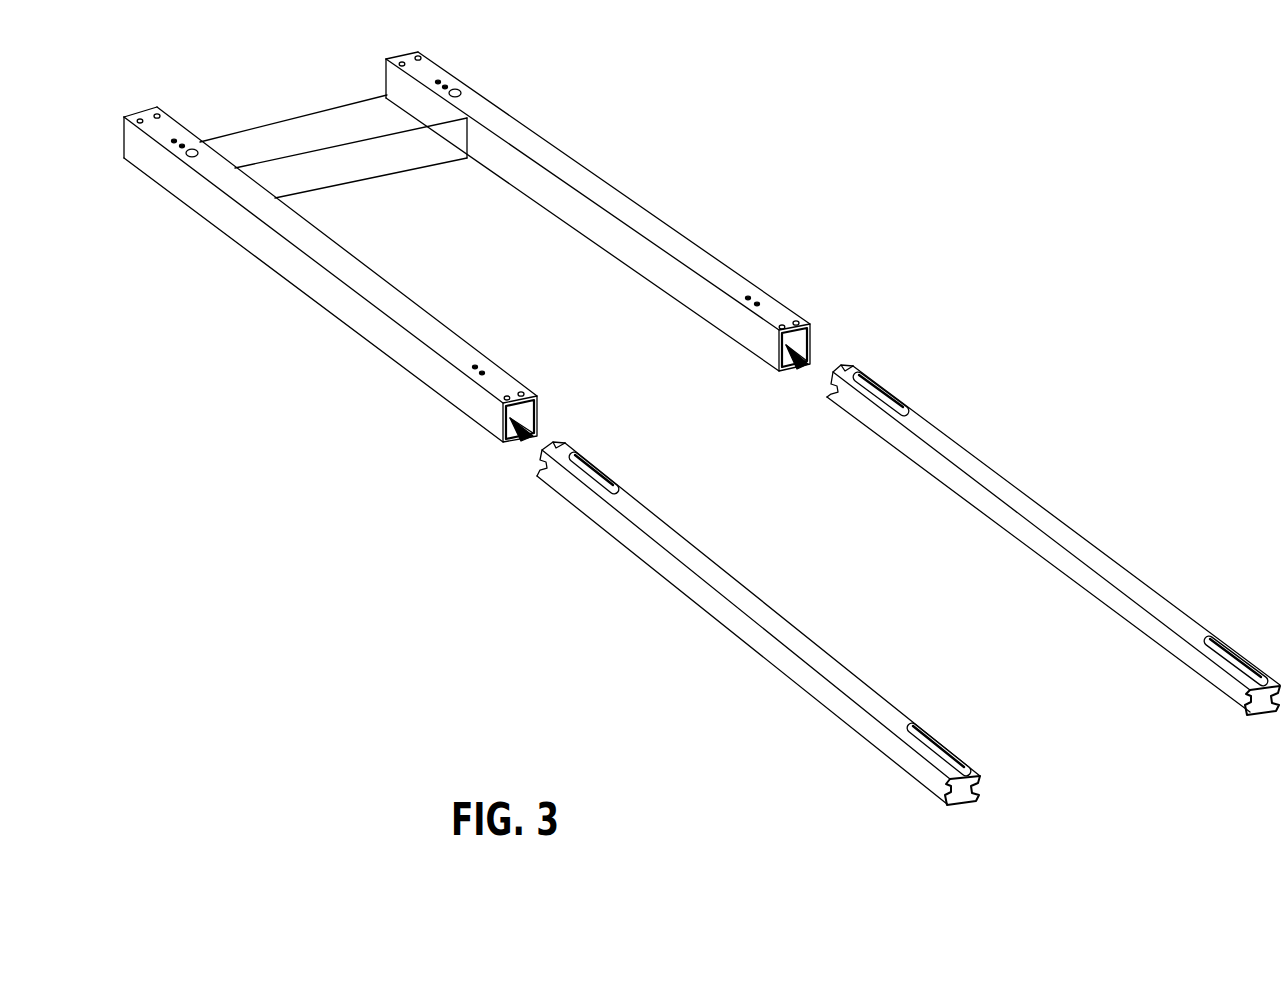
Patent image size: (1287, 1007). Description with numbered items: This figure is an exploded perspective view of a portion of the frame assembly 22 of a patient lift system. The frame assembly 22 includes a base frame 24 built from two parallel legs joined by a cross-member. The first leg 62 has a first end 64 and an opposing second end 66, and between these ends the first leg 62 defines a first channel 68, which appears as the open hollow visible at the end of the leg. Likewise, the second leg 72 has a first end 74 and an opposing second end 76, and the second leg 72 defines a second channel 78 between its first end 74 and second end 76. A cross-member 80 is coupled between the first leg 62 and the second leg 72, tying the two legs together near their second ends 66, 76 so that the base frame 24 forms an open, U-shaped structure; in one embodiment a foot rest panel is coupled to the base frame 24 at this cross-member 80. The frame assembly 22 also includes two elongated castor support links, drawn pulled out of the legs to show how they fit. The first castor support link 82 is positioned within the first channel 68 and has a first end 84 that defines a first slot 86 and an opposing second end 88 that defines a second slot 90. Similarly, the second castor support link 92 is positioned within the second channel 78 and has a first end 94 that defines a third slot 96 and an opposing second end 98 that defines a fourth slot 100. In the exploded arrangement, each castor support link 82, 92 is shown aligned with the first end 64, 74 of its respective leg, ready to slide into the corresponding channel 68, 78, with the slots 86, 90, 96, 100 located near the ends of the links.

The frame assembly 22 is at (1092, 122).
The base frame 24 is at (914, 240).
The first leg 62 is at (330, 313).
The first end 64 is at (478, 415).
The second end 66 is at (148, 167).
The first channel 68 is at (522, 446).
The second leg 72 is at (602, 244).
The first end 74 is at (754, 344).
The second end 76 is at (473, 102).
The second channel 78 is at (800, 373).
The cross-member 80 is at (385, 158).
The first castor support link 82 is at (747, 643).
The first end 84 is at (891, 758).
The first slot 86 is at (944, 750).
The second end 88 is at (568, 487).
The second slot 90 is at (604, 470).
The second castor support link 92 is at (1048, 562).
The first end 94 is at (1196, 670).
The third slot 96 is at (1243, 665).
The second end 98 is at (858, 411).
The fourth slot 100 is at (897, 398).